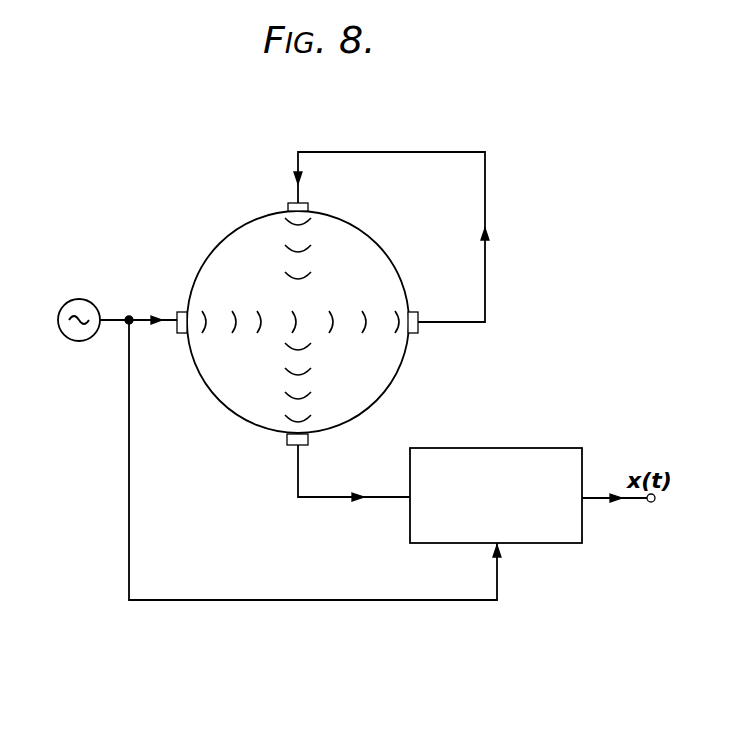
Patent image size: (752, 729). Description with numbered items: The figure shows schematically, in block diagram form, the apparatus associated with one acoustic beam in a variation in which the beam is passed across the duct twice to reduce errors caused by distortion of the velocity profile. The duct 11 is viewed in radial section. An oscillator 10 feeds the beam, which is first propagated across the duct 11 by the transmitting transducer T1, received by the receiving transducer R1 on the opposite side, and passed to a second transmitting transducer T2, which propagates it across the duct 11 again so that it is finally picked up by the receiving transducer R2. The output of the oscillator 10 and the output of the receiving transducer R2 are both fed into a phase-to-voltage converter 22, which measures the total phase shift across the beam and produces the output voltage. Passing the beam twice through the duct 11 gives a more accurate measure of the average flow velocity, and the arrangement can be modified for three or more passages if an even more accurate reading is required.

The oscillator 10 is at (95, 300).
The duct 11 is at (253, 223).
The transmitting transducer T1 is at (177, 312).
The second transmitting transducer T2 is at (308, 205).
The receiving transducer R1 is at (418, 314).
The receiving transducer R2 is at (287, 444).
The phase-to-voltage converter 22 is at (543, 450).